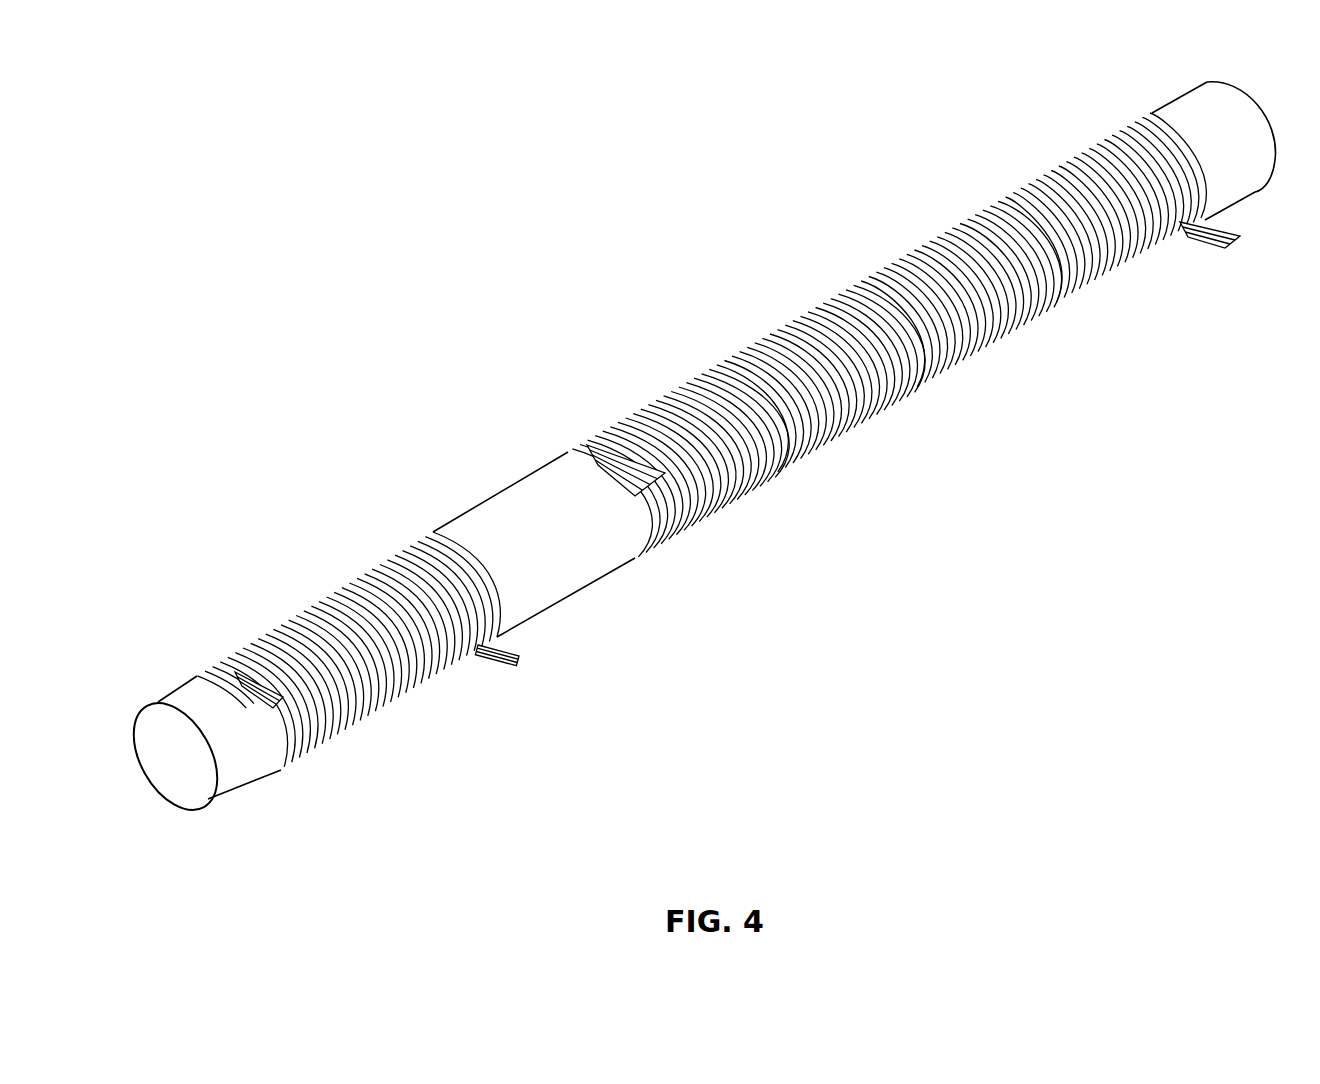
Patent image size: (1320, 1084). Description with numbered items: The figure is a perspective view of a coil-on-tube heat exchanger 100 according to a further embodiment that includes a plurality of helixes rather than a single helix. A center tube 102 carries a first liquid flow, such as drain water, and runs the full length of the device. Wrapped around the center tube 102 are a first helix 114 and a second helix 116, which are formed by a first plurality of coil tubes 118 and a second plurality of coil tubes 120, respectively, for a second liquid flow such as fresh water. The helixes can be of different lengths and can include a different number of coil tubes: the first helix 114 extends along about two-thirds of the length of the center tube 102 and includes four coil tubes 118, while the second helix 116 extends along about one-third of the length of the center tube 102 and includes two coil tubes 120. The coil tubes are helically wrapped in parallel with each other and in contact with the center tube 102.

The heat exchanger 100 is at (696, 479).
The center tube 102 is at (227, 758).
The first helix 114 is at (906, 335).
The second helix 116 is at (369, 629).
The first plurality of coil tubes 118 is at (967, 367).
The second plurality of coil tubes 120 is at (350, 697).